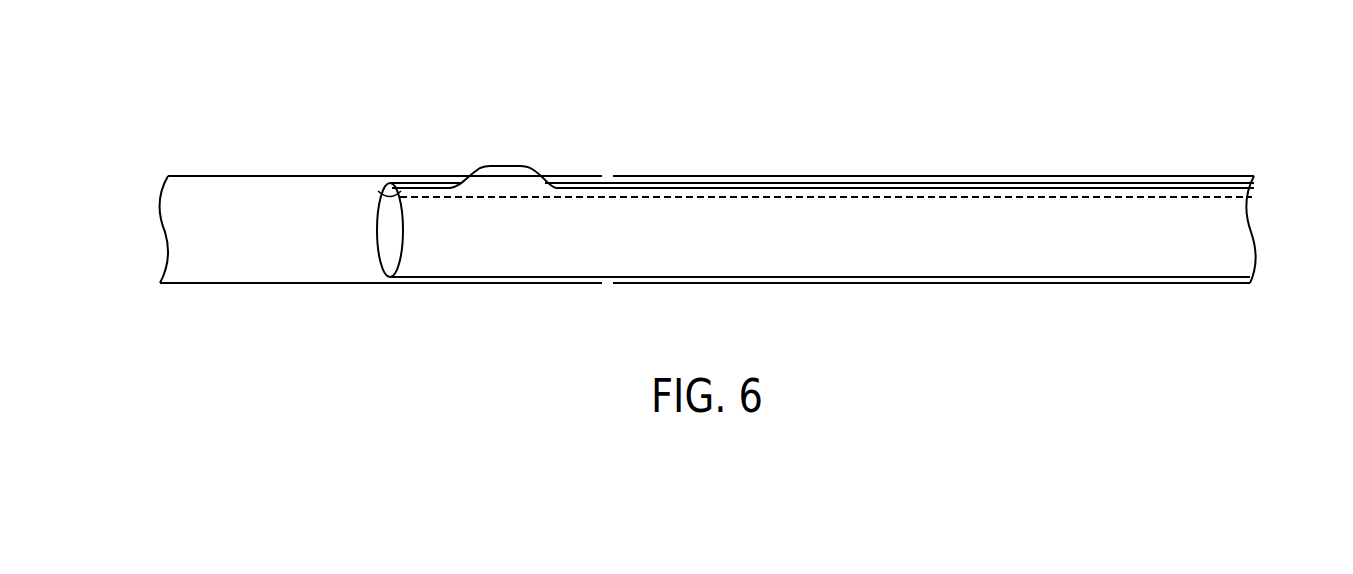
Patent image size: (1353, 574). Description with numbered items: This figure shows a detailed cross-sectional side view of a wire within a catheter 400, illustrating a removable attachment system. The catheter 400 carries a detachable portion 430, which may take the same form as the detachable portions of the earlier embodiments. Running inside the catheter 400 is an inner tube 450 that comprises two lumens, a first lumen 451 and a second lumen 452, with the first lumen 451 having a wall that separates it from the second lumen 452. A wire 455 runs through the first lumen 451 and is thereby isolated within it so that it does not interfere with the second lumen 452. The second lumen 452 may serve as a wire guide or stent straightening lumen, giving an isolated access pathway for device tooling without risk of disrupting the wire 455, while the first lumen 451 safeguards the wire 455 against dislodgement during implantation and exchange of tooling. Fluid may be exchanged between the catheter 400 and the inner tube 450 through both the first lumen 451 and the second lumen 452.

The catheter 400 is at (708, 202).
The detachable portion 430 is at (700, 176).
The inner tube 450 is at (815, 218).
The first lumen 451 is at (905, 197).
The second lumen 452 is at (802, 260).
The wire 455 is at (527, 167).